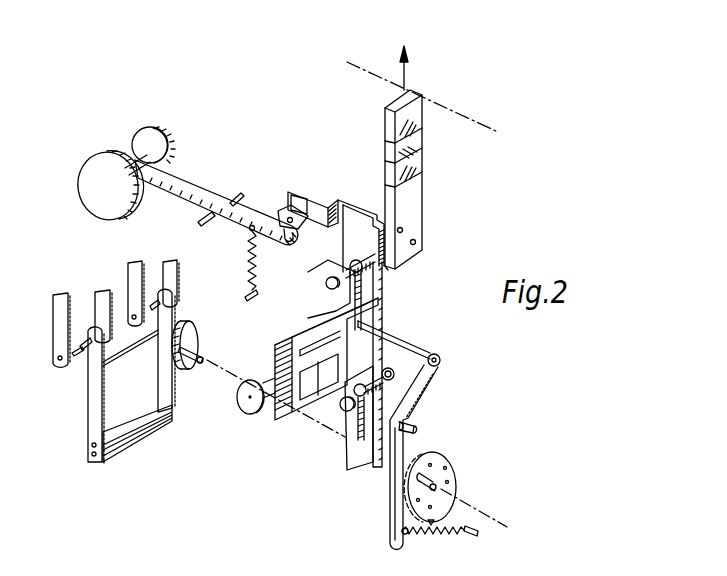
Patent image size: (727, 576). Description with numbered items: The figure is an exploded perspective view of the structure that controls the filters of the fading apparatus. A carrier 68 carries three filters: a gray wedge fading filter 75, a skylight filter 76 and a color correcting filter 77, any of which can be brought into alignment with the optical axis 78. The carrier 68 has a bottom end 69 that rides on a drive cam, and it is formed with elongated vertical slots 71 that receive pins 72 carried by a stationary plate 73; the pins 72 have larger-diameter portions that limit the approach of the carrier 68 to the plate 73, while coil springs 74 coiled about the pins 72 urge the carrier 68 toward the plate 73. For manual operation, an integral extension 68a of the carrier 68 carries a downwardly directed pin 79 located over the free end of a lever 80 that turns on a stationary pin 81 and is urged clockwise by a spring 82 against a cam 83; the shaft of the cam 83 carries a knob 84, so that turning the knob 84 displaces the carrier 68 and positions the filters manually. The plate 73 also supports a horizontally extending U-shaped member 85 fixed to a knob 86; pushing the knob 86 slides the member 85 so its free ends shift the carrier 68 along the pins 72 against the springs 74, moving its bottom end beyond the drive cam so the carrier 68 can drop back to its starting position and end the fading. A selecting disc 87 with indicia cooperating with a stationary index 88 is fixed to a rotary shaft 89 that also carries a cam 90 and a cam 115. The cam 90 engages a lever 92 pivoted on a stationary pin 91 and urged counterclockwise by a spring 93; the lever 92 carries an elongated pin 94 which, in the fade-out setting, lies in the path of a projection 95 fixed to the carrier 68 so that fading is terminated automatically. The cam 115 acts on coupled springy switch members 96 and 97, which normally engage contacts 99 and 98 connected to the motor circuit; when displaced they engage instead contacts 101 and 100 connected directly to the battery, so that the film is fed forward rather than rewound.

The carrier 68 is at (355, 213).
The integral extension 68a is at (311, 200).
The bottom end 69 is at (345, 458).
The elongated vertical slots 71 is at (371, 290).
The pins 72 is at (347, 258).
The stationary plate 73 is at (308, 293).
The coil springs 74 is at (383, 268).
The fading filter 75 is at (420, 122).
The skylight filter 76 is at (420, 138).
The color correcting filter 77 is at (420, 164).
The optical axis 78 is at (374, 76).
The downwardly directed pin 79 is at (280, 211).
The lever 80 is at (195, 185).
The stationary pin 81 is at (238, 186).
The spring 82 is at (250, 275).
The cam 83 is at (157, 140).
The knob 84 is at (107, 153).
The U-shaped member 85 is at (287, 343).
The knob 86 is at (250, 415).
The selecting disc 87 is at (440, 498).
The stationary index 88 is at (435, 524).
The rotary shaft 89 is at (202, 355).
The cam 90 is at (419, 434).
The stationary pin 91 is at (416, 426).
The lever 92 is at (395, 482).
The spring 93 is at (424, 540).
The elongated pin 94 is at (413, 347).
The projection 95 is at (388, 337).
The springy switch member 96 is at (158, 378).
The springy switch member 97 is at (90, 405).
The contact 98 is at (102, 292).
The contact 99 is at (172, 262).
The contact 100 is at (67, 293).
The contact 101 is at (133, 265).
The cam 115 is at (183, 370).